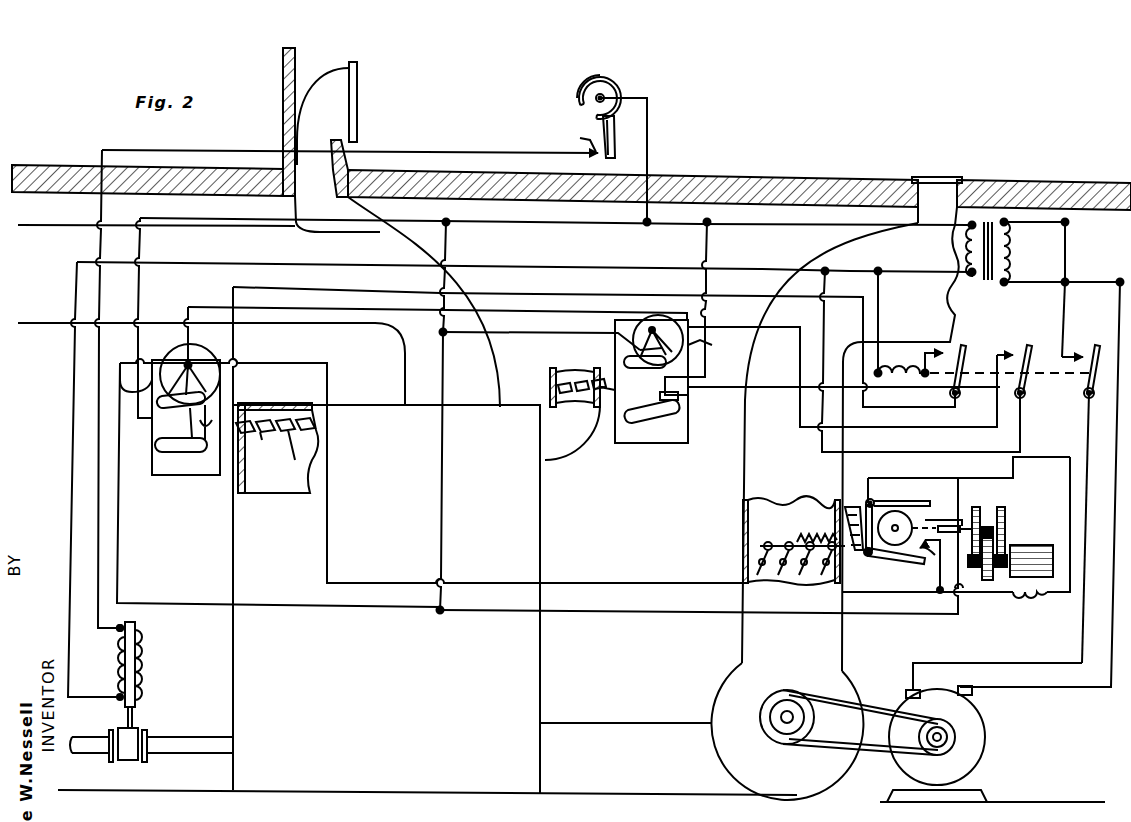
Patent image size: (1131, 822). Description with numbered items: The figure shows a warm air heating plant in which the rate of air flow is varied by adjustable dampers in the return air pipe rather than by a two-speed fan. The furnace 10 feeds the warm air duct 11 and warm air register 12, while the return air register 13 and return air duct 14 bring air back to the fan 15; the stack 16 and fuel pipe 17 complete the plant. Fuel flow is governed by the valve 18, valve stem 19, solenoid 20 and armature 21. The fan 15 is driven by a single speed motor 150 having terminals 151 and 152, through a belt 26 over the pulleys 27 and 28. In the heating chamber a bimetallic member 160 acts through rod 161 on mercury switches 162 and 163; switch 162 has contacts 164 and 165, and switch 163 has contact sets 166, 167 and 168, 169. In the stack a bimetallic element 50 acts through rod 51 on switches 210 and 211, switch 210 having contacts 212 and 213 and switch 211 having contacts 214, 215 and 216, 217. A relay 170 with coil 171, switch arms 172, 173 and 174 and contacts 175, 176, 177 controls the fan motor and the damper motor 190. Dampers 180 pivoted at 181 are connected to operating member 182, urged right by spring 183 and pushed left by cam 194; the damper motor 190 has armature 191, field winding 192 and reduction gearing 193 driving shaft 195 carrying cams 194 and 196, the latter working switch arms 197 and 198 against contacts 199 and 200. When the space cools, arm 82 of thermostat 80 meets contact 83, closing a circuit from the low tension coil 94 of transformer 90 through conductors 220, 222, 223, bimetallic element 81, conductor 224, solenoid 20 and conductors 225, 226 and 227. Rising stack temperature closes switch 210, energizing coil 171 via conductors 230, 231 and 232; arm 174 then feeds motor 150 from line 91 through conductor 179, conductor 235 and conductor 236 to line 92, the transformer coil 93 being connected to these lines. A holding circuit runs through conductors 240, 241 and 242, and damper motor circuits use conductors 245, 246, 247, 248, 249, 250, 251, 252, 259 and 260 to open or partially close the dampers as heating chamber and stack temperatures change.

The furnace 10 is at (358, 670).
The warm air duct 11 is at (447, 383).
The warm air register 12 is at (358, 105).
The return air register 13 is at (938, 172).
The return air duct 14 is at (773, 473).
The fan 15 is at (708, 690).
The stack 16 is at (553, 460).
The fuel pipe 17 is at (194, 726).
The valve 18 is at (124, 758).
The valve stem 19 is at (134, 715).
The solenoid 20 is at (145, 650).
The armature 21 is at (138, 626).
The belt 26 is at (878, 760).
The pulley 27 is at (940, 760).
The pulley 28 is at (795, 690).
The bimetallic element 50 is at (572, 368).
The rod 51 is at (588, 395).
The thermostat 80 is at (620, 85).
The bimetallic element 81 is at (578, 77).
The arm 82 is at (614, 137).
The contact 83 is at (575, 140).
The transformer 90 is at (992, 222).
The line 91 is at (1102, 232).
The line 92 is at (1126, 272).
The transformer coil 93 is at (1010, 258).
The low tension coil 94 is at (960, 253).
The single speed motor 150 is at (985, 745).
The terminal 151 is at (906, 690).
The terminal 152 is at (975, 697).
The bimetallic member 160 is at (286, 440).
The rod 161 is at (296, 462).
The mercury switch 162 is at (196, 460).
The mercury switch 163 is at (172, 340).
The contact 164 is at (190, 420).
The contact 165 is at (208, 414).
The contact 166 is at (120, 363).
The contact 167 is at (178, 352).
The contact 168 is at (194, 352).
The contact 169 is at (204, 364).
The relay 170 is at (1005, 330).
The coil 171 is at (915, 360).
The switch arm 172 is at (967, 360).
The switch arm 173 is at (1030, 367).
The switch arm 174 is at (1086, 386).
The contact 175 is at (942, 338).
The contact 176 is at (1016, 346).
The contact 177 is at (1092, 348).
The conductor 179 is at (1066, 302).
The dampers 180 is at (745, 578).
The pivot 181 is at (766, 540).
The operating member 182 is at (780, 530).
The spring 183 is at (805, 532).
The damper motor 190 is at (990, 497).
The armature 191 is at (1045, 545).
The field winding 192 is at (1030, 598).
The reduction gearing 193 is at (990, 507).
The cam 194 is at (852, 500).
The shaft 195 is at (962, 514).
The cam 196 is at (876, 560).
The switch arm 197 is at (910, 558).
The switch arm 198 is at (880, 480).
The contact 199 is at (935, 558).
The contact 200 is at (930, 512).
The switch 210 is at (668, 426).
The switch 211 is at (660, 370).
The contact 212 is at (658, 397).
The contact 213 is at (690, 403).
The contact 214 is at (628, 352).
The contact 215 is at (634, 330).
The contact 216 is at (661, 342).
The contact 217 is at (712, 345).
The conductor 220 is at (818, 218).
The conductor 222 is at (688, 220).
The conductor 223 is at (655, 155).
The conductor 224 is at (472, 148).
The conductor 225 is at (530, 264).
The conductor 226 is at (866, 265).
The conductor 227 is at (908, 268).
The conductor 230 is at (708, 245).
The conductor 231 is at (784, 380).
The conductor 232 is at (880, 298).
The conductor 235 is at (1082, 419).
The conductor 236 is at (1110, 478).
The conductor 240 is at (555, 216).
The conductor 241 is at (390, 214).
The conductor 242 is at (328, 286).
The conductor 245 is at (448, 244).
The conductor 246 is at (441, 478).
The conductor 247 is at (608, 604).
The conductor 248 is at (295, 598).
The conductor 249 is at (950, 430).
The conductor 250 is at (542, 305).
The conductor 251 is at (330, 475).
The conductor 252 is at (1066, 450).
The conductor 259 is at (547, 328).
The conductor 260 is at (990, 473).